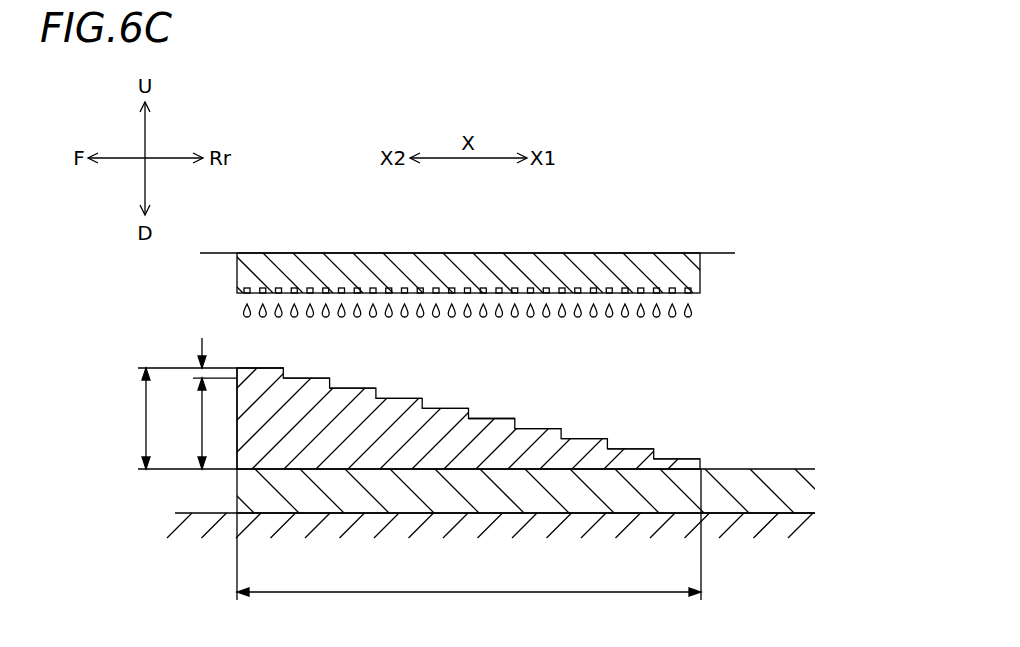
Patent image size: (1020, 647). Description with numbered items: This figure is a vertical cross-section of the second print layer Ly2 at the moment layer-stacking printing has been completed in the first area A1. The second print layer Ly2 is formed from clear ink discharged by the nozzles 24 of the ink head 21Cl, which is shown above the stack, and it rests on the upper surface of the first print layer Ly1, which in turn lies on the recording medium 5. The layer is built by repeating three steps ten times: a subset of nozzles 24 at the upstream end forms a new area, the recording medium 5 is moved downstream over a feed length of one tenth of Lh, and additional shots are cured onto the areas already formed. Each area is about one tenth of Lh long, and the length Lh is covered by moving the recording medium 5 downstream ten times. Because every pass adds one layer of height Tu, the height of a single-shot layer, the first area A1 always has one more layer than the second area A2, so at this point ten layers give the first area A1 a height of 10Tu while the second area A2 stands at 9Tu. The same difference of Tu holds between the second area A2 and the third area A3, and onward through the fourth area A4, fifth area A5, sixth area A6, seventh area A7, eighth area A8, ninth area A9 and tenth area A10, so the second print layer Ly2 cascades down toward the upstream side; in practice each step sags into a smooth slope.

The ink head 21Cl is at (700, 262).
The nozzles 24 is at (696, 282).
The recording medium 5 is at (198, 513).
The first print layer Ly1 is at (770, 468).
The second print layer Ly2 is at (700, 389).
The first area A1 is at (252, 368).
The second area A2 is at (308, 378).
The third area A3 is at (355, 388).
The fourth area A4 is at (402, 398).
The fifth area A5 is at (449, 408).
The sixth area A6 is at (495, 418).
The seventh area A7 is at (541, 428).
The eighth area A8 is at (587, 438).
The ninth area A9 is at (634, 448).
The tenth area A10 is at (680, 458).
The height of a single-shot layer Tu is at (200, 373).
The height of the second area 9Tu is at (197, 423).
The height of the first area 10Tu is at (162, 418).
The length of the second print layer Lh is at (469, 534).